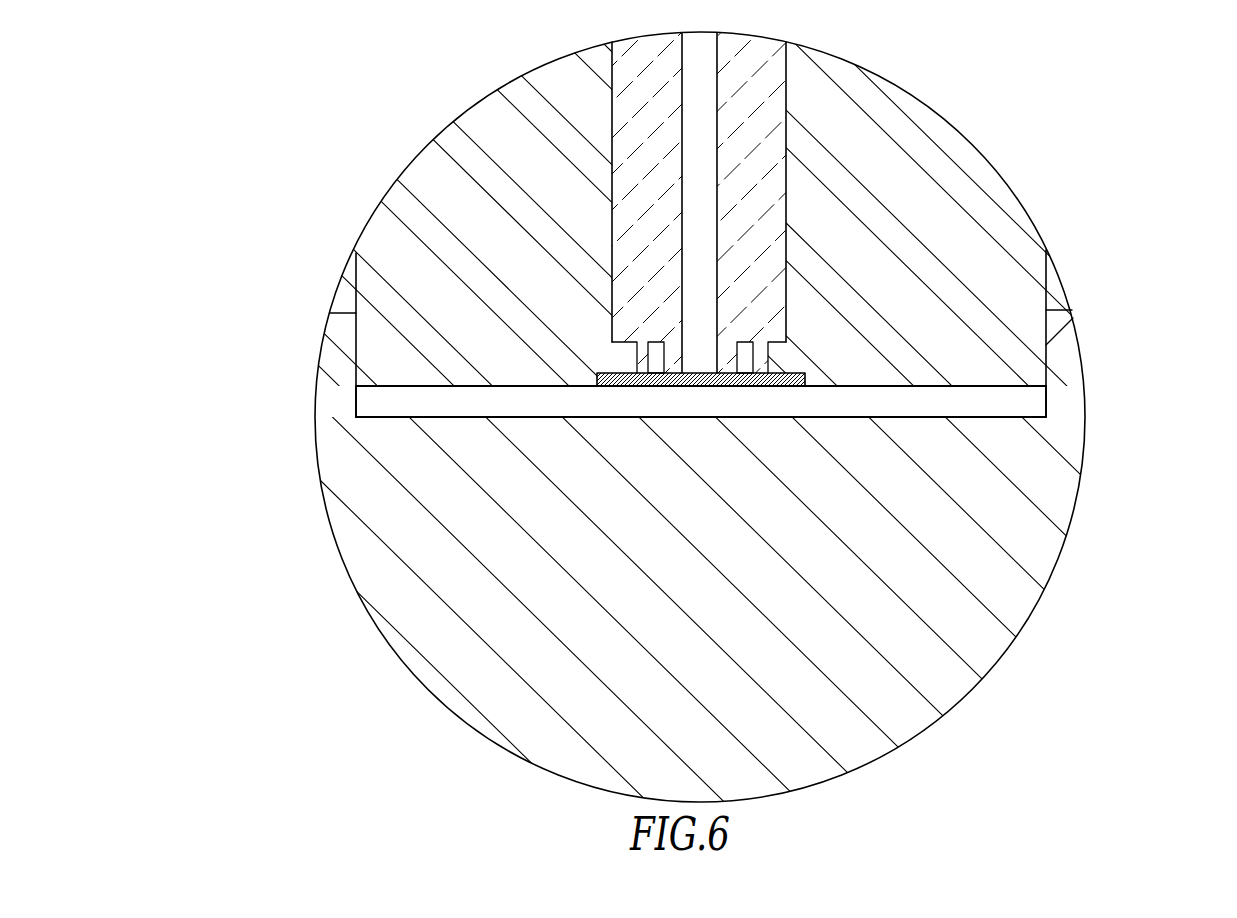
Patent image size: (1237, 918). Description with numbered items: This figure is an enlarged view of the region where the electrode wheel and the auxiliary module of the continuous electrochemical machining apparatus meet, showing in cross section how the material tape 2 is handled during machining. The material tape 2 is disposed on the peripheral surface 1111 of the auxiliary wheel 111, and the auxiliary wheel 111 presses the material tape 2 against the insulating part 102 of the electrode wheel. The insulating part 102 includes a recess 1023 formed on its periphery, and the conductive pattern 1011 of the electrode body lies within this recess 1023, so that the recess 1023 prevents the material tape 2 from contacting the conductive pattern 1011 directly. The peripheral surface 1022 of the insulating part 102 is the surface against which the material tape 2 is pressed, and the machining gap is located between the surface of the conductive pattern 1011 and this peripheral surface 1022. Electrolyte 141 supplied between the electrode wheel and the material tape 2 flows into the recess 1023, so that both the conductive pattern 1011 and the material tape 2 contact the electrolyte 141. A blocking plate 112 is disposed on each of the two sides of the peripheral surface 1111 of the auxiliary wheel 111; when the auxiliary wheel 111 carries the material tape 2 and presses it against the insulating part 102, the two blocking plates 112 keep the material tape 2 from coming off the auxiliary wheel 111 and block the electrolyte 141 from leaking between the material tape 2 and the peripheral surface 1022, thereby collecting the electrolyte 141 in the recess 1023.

The insulating part 102 is at (418, 237).
The conductive pattern 1011 is at (802, 233).
The recess 1023 is at (597, 373).
The electrolyte 141 is at (805, 375).
The peripheral surface 1022 is at (927, 386).
The blocking plate 112 is at (342, 375).
The material tape 2 is at (393, 400).
The peripheral surface 1111 is at (467, 420).
The auxiliary wheel 111 is at (960, 512).